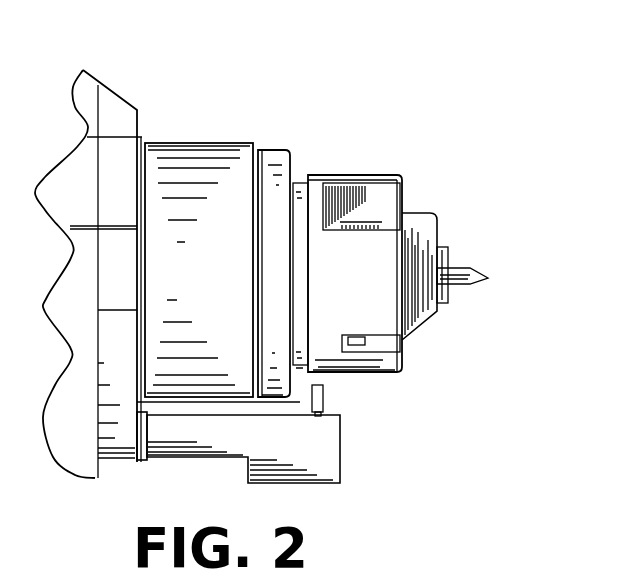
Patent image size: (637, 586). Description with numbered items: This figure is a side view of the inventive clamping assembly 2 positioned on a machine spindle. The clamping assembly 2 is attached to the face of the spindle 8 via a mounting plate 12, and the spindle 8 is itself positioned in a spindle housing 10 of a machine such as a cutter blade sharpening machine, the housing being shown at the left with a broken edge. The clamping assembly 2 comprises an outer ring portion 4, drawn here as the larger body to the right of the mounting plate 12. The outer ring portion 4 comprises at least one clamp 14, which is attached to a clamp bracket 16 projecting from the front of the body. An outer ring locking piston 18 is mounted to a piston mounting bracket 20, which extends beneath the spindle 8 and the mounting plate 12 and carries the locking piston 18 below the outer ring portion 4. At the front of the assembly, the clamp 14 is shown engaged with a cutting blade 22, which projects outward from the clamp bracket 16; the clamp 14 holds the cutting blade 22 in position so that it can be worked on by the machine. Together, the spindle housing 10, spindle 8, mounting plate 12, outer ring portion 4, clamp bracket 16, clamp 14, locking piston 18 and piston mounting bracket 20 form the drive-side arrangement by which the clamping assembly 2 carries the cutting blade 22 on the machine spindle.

The clamping assembly 2 is at (413, 162).
The outer ring portion 4 is at (378, 313).
The spindle 8 is at (202, 167).
The spindle housing 10 is at (120, 110).
The mounting plate 12 is at (283, 170).
The clamp 14 is at (447, 247).
The clamp bracket 16 is at (418, 223).
The outer ring locking piston 18 is at (323, 397).
The piston mounting bracket 20 is at (323, 467).
The cutting blade 22 is at (472, 272).